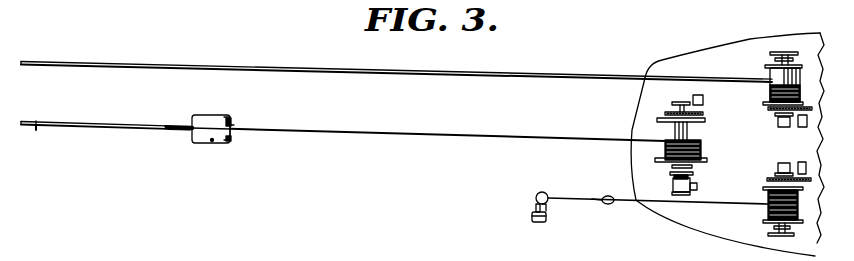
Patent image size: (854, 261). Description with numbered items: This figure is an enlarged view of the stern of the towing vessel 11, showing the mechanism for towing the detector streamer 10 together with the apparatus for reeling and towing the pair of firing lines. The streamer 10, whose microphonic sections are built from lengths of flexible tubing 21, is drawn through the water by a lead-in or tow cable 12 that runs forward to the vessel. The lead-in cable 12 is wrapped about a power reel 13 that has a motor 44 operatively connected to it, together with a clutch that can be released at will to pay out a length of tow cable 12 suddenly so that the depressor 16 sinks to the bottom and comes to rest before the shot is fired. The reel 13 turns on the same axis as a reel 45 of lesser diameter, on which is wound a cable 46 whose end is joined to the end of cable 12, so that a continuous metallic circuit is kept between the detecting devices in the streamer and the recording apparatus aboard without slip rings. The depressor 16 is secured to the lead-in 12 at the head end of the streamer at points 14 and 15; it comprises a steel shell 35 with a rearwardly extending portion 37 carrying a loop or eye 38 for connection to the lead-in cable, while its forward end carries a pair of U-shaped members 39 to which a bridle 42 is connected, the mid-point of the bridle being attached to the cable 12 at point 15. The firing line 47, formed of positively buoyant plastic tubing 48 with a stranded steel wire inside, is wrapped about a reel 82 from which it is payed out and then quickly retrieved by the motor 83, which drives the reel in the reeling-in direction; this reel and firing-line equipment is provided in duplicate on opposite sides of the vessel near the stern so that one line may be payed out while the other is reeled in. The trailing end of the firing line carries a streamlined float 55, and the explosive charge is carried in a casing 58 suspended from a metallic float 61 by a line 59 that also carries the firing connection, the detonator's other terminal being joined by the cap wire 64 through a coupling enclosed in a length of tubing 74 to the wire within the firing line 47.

The detector streamer 10 is at (107, 121).
The vessel 11 is at (702, 48).
The lead-in or tow cable 12 is at (353, 131).
The power reel 13 is at (702, 131).
The point 14 is at (167, 124).
The point 15 is at (232, 125).
The depressor 16 is at (212, 142).
The flexible tubing 21 is at (37, 129).
The steel shell 35 is at (197, 144).
The rearwardly extending portion 37 is at (180, 124).
The loop or eye 38 is at (168, 131).
The U-shaped members 39 is at (231, 119).
The bridle 42 is at (228, 118).
The motor 44 is at (704, 100).
The reel 45 is at (676, 190).
The cable 46 is at (674, 177).
The firing line 47 is at (530, 76).
The tubing 48 is at (278, 70).
The streamlined float 55 is at (608, 196).
The casing 58 is at (541, 223).
The line 59 is at (534, 207).
The metallic float 61 is at (543, 192).
The cap wire 64 is at (548, 210).
The tubing 74 is at (596, 202).
The reel 82 is at (770, 72).
The motor 83 is at (800, 162).